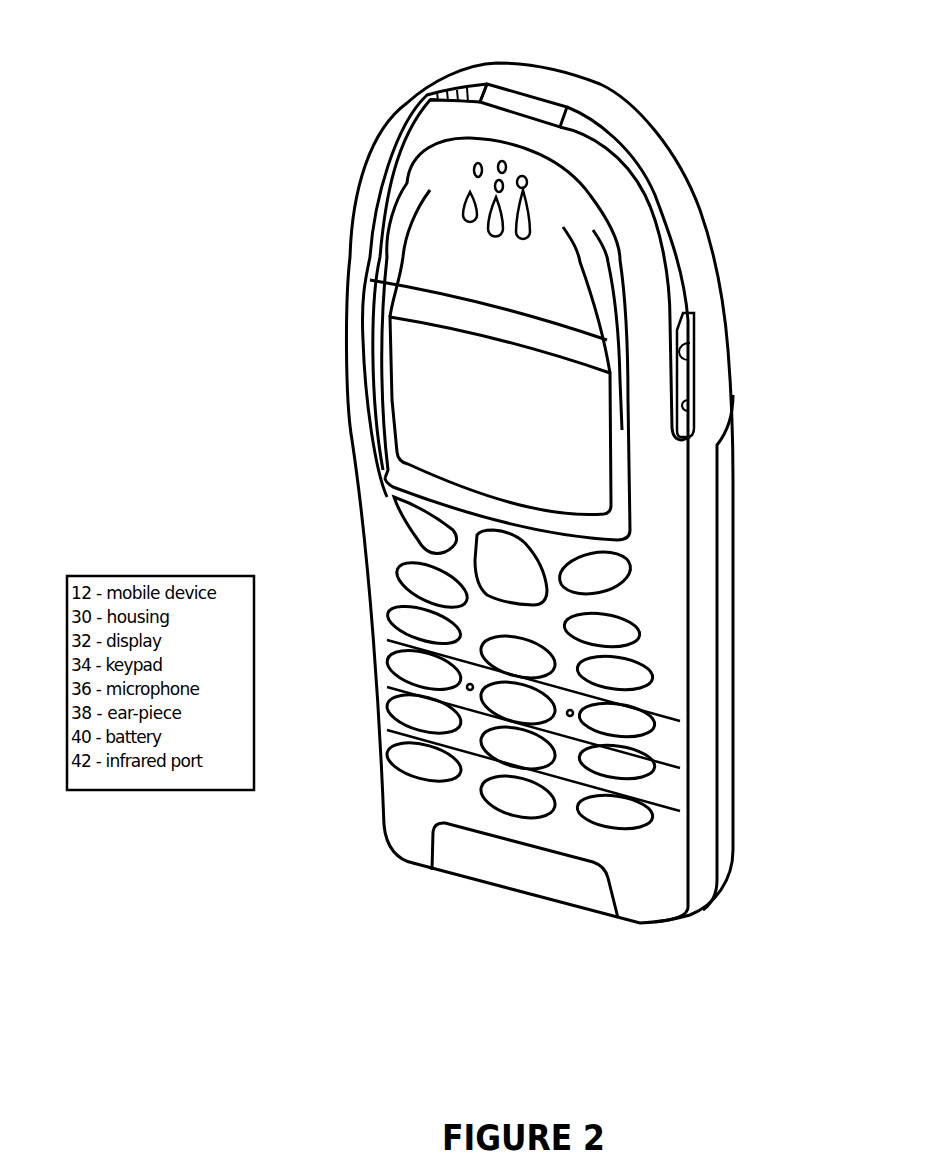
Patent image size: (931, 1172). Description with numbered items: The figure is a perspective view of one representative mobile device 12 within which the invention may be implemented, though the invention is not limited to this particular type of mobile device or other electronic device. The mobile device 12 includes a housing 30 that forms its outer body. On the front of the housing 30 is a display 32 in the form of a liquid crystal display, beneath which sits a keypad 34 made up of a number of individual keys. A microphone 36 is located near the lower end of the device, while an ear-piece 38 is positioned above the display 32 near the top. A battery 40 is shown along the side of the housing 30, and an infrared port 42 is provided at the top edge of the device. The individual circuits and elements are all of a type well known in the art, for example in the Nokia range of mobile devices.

The mobile device 12 is at (663, 73).
The housing 30 is at (697, 234).
The display 32 is at (590, 462).
The keypad 34 is at (613, 817).
The microphone 36 is at (457, 857).
The ear-piece 38 is at (486, 193).
The battery 40 is at (727, 797).
The infrared port 42 is at (523, 102).